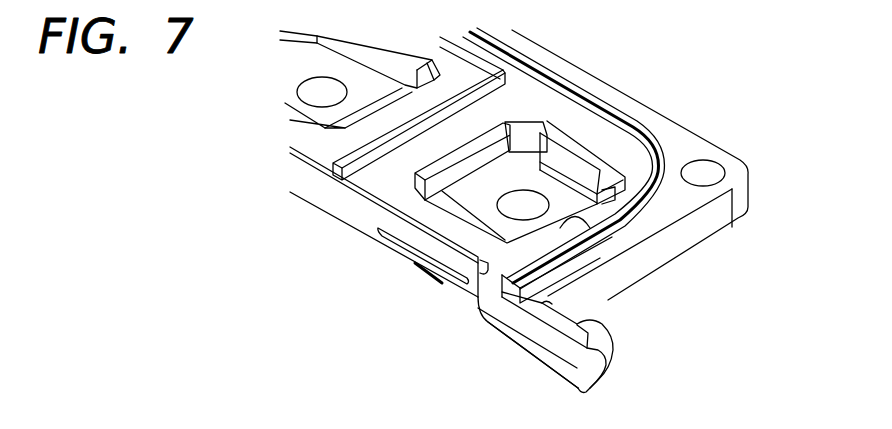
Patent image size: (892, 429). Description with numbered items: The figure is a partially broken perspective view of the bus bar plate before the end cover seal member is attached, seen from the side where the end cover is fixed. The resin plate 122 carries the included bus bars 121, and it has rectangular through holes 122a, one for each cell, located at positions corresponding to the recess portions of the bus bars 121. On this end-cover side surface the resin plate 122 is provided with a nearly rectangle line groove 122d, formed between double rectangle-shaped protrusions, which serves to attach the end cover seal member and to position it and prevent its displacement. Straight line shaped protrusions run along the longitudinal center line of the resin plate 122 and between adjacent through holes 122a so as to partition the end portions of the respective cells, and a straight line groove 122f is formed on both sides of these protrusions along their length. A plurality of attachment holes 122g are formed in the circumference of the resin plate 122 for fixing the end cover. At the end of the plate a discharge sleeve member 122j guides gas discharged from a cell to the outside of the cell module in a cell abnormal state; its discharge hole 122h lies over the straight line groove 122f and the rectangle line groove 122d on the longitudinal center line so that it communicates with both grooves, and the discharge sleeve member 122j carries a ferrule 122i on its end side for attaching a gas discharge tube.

The bus bar 121 is at (552, 146).
The resin plate 122 is at (514, 165).
The through hole 122a is at (588, 212).
The rectangle line groove 122d is at (642, 135).
The straight line groove 122f is at (482, 300).
The attachment hole 122g is at (717, 165).
The discharge hole 122h is at (503, 317).
The ferrule 122i is at (620, 356).
The discharge sleeve member 122j is at (518, 348).